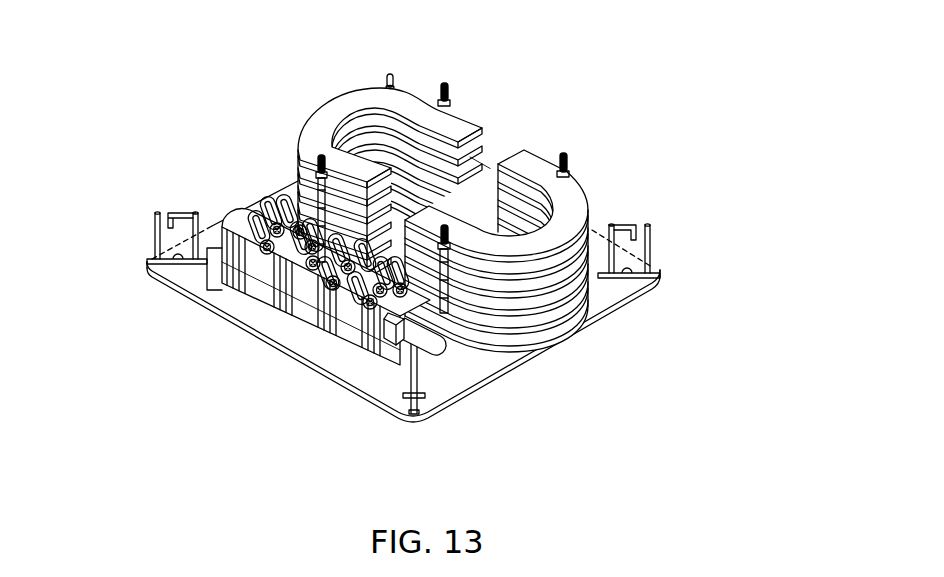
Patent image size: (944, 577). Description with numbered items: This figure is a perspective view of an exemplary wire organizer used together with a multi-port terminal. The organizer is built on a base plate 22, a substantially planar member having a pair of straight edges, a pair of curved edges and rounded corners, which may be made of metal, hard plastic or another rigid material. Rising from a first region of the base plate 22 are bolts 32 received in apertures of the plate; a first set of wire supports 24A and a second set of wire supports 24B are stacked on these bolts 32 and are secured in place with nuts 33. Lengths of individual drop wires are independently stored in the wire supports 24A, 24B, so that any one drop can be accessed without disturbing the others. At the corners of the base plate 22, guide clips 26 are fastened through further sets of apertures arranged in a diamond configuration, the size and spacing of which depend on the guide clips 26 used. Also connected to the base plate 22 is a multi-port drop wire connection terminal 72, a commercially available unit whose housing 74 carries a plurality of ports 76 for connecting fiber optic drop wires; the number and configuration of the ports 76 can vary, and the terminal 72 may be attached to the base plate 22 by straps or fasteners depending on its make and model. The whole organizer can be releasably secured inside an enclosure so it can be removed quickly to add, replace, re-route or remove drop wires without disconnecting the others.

The base plate 22 is at (196, 313).
The first set of wire supports 24A is at (346, 90).
The second set of wire supports 24B is at (566, 182).
The guide clip 26 is at (393, 70).
The bolt 32 is at (452, 95).
The nut 33 is at (455, 107).
The multi-port drop wire connection terminal 72 is at (450, 352).
The housing 74 is at (235, 207).
The ports 76 is at (318, 300).